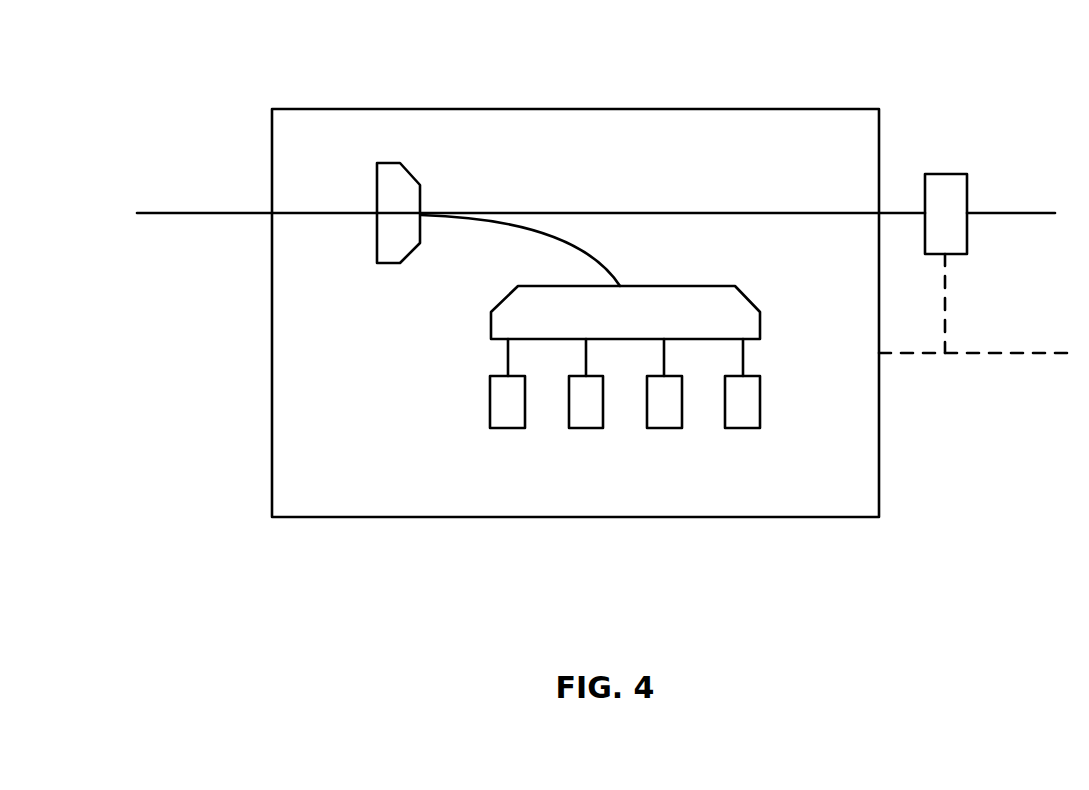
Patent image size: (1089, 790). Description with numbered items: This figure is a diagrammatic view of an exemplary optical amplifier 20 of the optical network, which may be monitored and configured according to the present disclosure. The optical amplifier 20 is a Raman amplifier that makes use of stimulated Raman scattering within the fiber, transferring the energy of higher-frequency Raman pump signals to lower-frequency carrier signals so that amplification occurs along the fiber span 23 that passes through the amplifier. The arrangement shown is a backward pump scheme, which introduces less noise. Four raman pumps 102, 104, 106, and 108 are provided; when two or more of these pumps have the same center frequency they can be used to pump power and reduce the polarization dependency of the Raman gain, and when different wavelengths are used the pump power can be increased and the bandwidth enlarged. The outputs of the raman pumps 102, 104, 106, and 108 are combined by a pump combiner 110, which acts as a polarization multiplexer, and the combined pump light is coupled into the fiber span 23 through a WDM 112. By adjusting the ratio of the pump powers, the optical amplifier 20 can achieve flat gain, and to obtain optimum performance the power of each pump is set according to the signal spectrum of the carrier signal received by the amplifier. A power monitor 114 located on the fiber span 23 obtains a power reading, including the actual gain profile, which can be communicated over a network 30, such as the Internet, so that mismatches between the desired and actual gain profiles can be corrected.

The optical amplifier 20 is at (648, 108).
The fiber span 23 is at (1015, 213).
The network 30 is at (997, 353).
The raman pump 102 is at (503, 428).
The raman pump 104 is at (586, 428).
The raman pump 106 is at (666, 428).
The raman pump 108 is at (745, 428).
The pump combiner 110 is at (672, 286).
The WDM 112 is at (405, 172).
The power monitor 114 is at (941, 174).